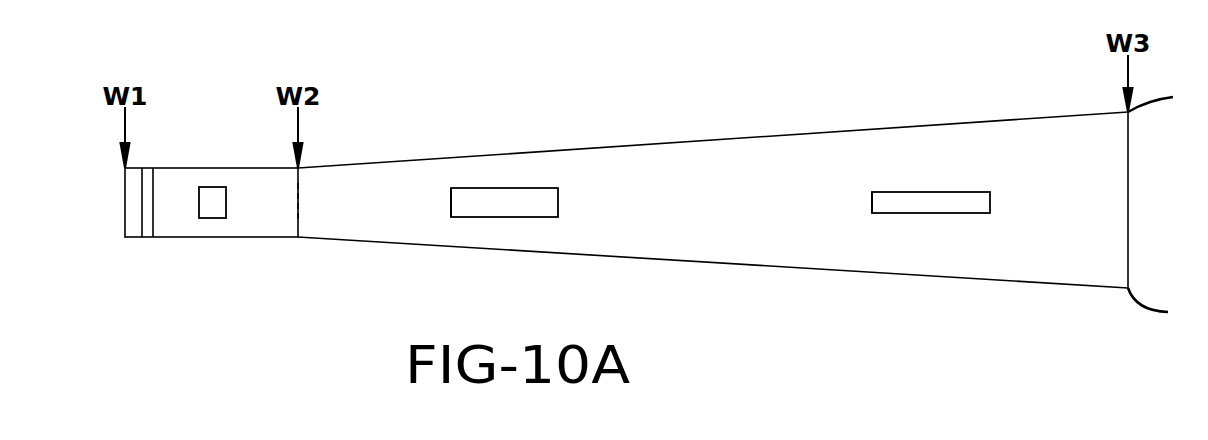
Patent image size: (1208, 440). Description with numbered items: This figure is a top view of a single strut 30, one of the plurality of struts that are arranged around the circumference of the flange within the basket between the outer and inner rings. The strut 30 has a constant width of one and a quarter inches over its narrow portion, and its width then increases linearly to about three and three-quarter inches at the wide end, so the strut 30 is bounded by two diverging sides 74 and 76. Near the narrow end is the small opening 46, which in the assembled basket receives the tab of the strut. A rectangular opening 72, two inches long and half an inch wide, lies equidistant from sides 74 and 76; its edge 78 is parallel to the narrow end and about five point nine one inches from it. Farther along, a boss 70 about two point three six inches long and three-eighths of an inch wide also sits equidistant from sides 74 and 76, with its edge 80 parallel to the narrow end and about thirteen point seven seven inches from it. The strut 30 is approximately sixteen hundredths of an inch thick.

The strut 30 is at (730, 182).
The opening 46 is at (212, 197).
The boss 70 is at (945, 200).
The opening 72 is at (540, 200).
The side 74 is at (470, 155).
The side 76 is at (470, 249).
The edge 78 is at (449, 202).
The edge 80 is at (872, 198).